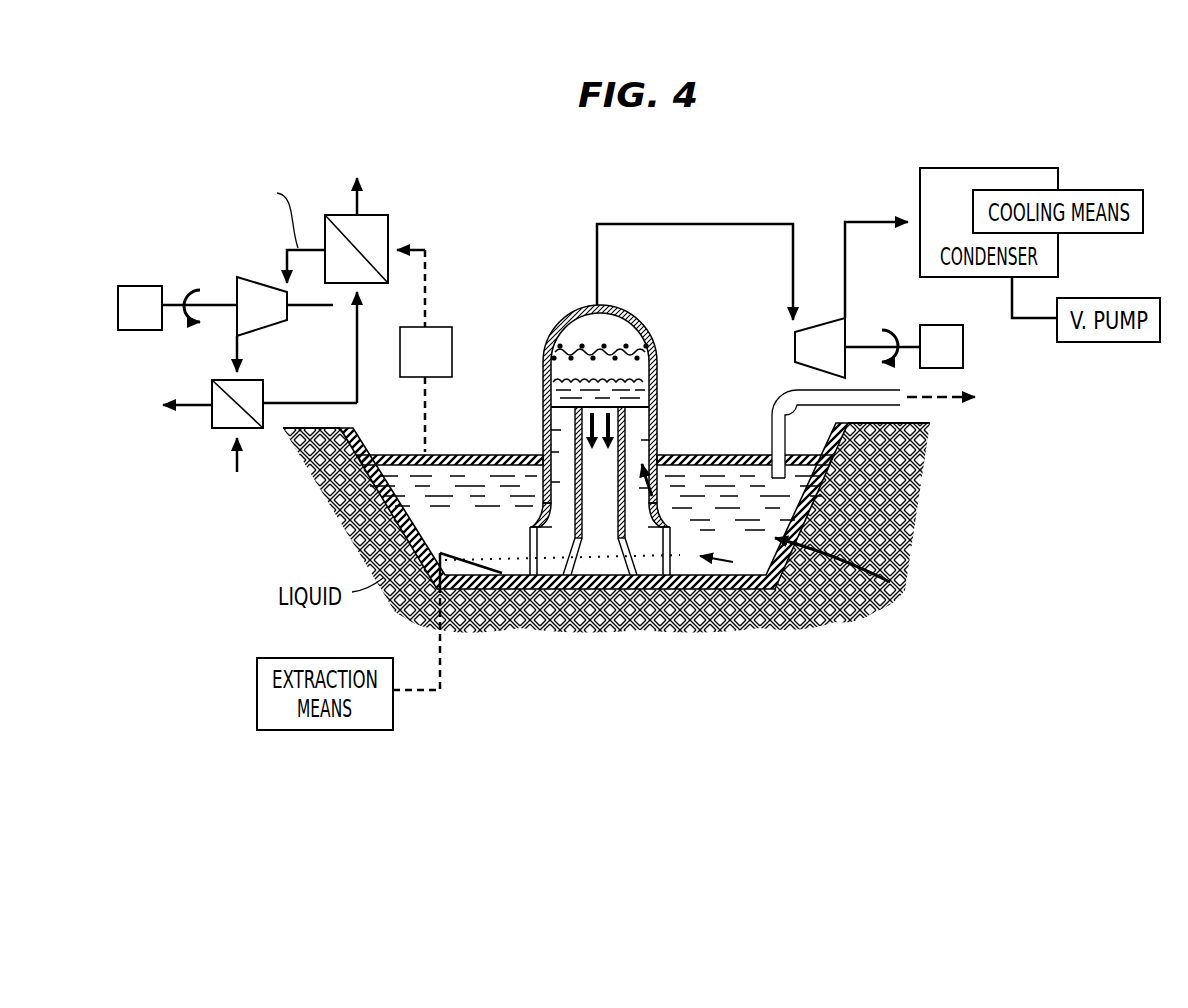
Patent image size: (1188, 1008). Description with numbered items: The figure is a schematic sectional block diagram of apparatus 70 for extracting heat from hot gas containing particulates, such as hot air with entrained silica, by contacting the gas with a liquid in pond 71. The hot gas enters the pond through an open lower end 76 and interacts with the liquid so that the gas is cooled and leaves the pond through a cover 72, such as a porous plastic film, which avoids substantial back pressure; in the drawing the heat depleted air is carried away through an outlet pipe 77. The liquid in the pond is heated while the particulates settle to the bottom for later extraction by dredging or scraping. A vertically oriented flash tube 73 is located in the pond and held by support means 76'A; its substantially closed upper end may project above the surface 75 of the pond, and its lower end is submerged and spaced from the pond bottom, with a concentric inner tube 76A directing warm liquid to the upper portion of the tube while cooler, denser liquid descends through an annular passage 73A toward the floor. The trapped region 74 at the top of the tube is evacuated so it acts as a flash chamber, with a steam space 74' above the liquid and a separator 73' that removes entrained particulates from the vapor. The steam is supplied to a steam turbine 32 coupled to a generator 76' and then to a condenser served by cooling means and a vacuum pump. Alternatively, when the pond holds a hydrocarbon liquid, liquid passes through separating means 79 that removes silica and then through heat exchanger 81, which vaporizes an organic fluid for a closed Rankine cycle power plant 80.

The steam turbine 32 is at (848, 330).
The apparatus 70 is at (507, 228).
The pond 71 is at (415, 480).
The cover 72 is at (483, 460).
The flash tube 73 is at (639, 432).
The separator 73' is at (634, 348).
The annular passage / skirt 73A is at (655, 510).
The trapped region 74 is at (600, 409).
The steam space of vessel 74' is at (616, 336).
The surface of the pond 75 is at (713, 455).
The open lower end 76 is at (909, 604).
The generator 76' is at (960, 351).
The support means 76'A is at (560, 559).
The inner tube 76A is at (548, 456).
The exhaust pipe 77 is at (787, 399).
The separating means 79 is at (452, 350).
The closed Rankine cycle power plant 80 is at (216, 262).
The heat exchanger 81 is at (376, 228).